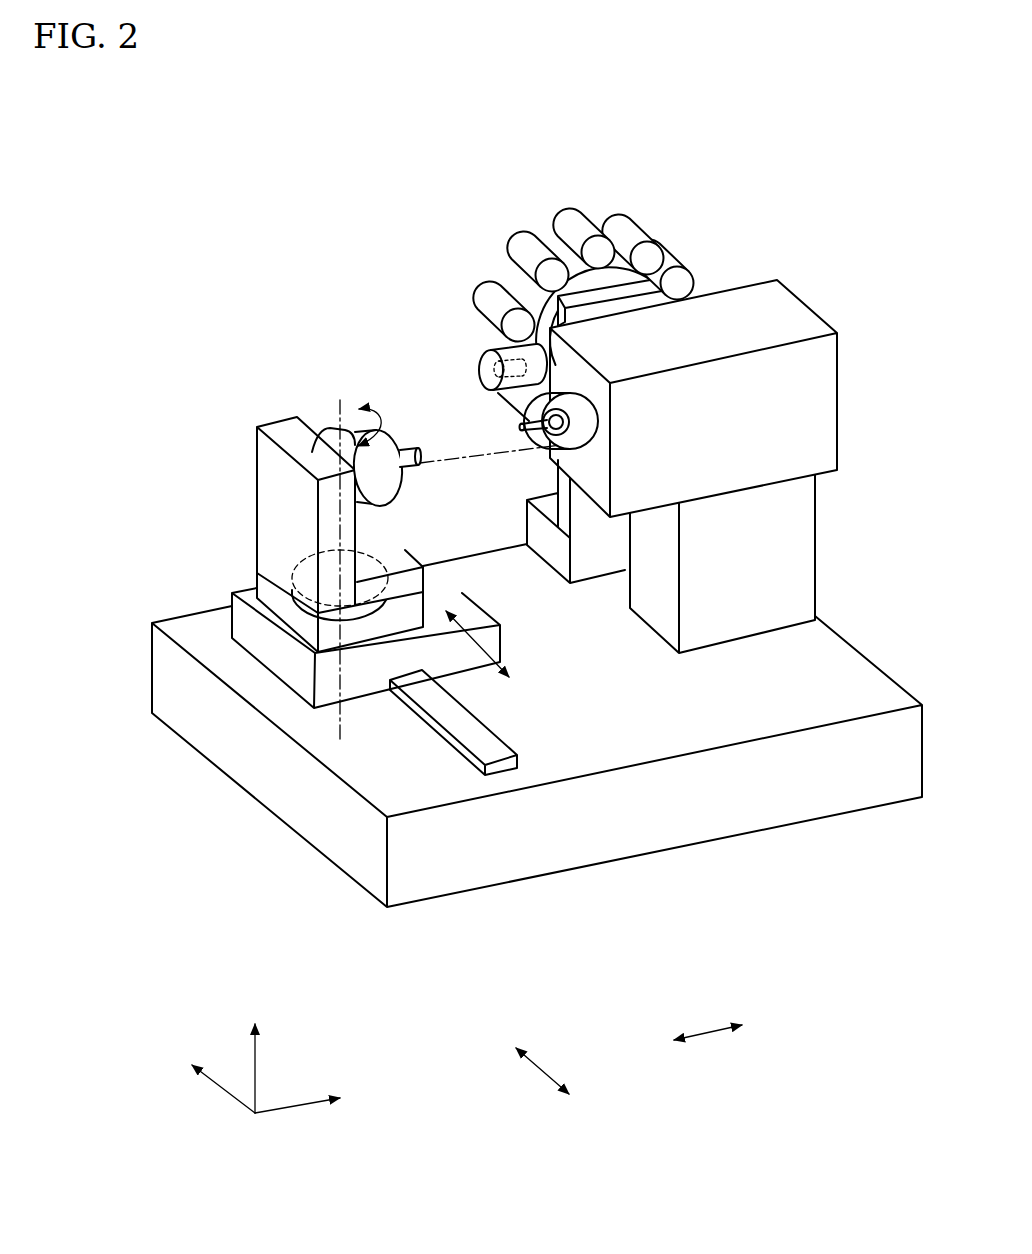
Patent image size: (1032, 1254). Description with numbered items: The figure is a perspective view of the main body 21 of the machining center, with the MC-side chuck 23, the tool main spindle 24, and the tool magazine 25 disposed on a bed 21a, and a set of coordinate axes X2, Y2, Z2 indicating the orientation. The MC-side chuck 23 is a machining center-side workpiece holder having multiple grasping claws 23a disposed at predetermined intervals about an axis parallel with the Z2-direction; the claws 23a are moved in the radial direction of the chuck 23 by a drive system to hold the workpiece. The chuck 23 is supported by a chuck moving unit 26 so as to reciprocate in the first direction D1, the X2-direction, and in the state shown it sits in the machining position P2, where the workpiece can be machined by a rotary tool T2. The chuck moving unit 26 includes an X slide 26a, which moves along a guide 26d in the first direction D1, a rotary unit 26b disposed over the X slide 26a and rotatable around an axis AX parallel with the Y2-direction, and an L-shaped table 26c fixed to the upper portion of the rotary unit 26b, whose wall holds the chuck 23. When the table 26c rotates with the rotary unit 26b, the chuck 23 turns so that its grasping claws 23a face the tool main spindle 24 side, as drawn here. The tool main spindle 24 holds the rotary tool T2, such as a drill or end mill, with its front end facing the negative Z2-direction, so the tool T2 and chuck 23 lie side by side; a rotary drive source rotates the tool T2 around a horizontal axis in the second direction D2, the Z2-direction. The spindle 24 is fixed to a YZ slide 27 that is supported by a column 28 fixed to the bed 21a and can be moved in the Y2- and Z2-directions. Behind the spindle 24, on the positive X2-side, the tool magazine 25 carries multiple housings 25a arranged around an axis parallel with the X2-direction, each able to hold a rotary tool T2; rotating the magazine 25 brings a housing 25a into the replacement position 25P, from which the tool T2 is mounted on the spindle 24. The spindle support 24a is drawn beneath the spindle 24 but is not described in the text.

The main body 21 is at (750, 191).
The bed 21a is at (744, 826).
The MC-side chuck 23 is at (392, 480).
The grasping claws 23a is at (410, 456).
The tool main spindle 24 is at (597, 412).
The spindle support bracket 24a is at (560, 450).
The tool magazine 25 is at (600, 206).
The housings 25a is at (522, 256).
The replacement position 25P is at (486, 343).
The chuck moving unit 26 is at (299, 689).
The X slide 26a is at (264, 645).
The rotary unit 26b is at (364, 602).
The table 26c is at (267, 461).
The guide 26d is at (510, 764).
The YZ slide 27 is at (825, 355).
The column 28 is at (803, 553).
The axis AX is at (338, 406).
The machining position P2 is at (389, 411).
The rotary tool T2 is at (484, 373).
The first direction D1 is at (518, 852).
The second direction D2 is at (708, 1050).
The X2-direction X2 is at (208, 1078).
The Y2-direction Y2 is at (257, 1050).
The Z2-direction Z2 is at (316, 1101).